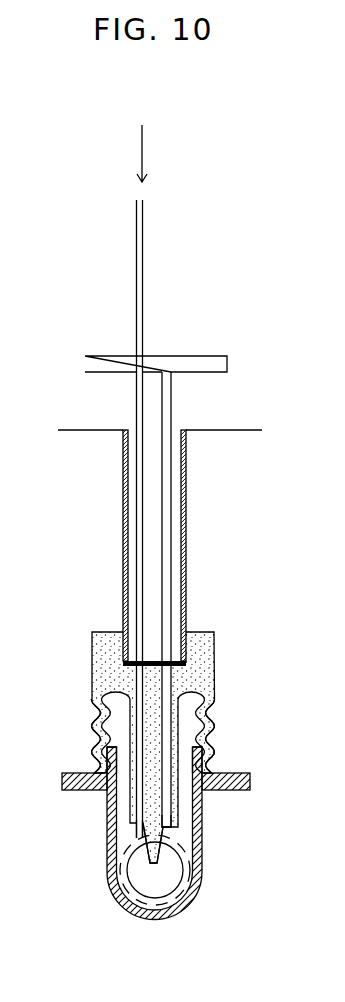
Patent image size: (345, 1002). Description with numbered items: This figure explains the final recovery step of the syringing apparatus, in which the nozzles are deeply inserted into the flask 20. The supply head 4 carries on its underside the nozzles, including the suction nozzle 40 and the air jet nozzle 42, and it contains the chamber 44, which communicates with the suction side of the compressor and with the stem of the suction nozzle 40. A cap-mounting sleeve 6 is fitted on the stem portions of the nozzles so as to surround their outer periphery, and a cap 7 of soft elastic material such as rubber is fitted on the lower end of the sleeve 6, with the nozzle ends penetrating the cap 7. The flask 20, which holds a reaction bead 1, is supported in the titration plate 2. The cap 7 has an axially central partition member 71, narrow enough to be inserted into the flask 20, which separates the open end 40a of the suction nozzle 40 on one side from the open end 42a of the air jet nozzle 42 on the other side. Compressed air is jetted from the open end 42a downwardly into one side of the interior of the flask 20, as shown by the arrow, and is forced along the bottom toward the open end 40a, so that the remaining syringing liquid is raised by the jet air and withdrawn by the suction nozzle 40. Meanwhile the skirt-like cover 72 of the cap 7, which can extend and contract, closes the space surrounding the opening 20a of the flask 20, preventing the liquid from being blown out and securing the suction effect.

The reaction bead 1 is at (148, 878).
The titration plate 2 is at (80, 767).
The supply head 4 is at (73, 435).
The cap-mounting sleeve 6 is at (123, 475).
The cap 7 is at (221, 662).
The flask 20 is at (108, 878).
The opening of the flask 20a is at (185, 755).
The suction nozzle 40 is at (168, 462).
The open end of the suction nozzle 40a is at (172, 833).
The air jet nozzle 42 is at (137, 510).
The open end of the air jet nozzle 42a is at (137, 845).
The chamber 44 is at (200, 362).
The partition member 71 is at (173, 846).
The skirt-like cover 72 is at (213, 723).